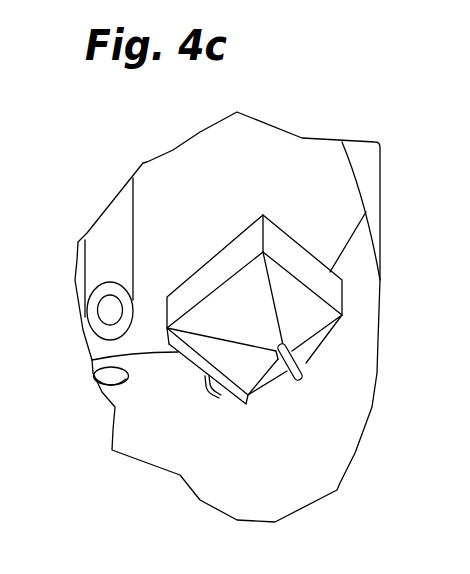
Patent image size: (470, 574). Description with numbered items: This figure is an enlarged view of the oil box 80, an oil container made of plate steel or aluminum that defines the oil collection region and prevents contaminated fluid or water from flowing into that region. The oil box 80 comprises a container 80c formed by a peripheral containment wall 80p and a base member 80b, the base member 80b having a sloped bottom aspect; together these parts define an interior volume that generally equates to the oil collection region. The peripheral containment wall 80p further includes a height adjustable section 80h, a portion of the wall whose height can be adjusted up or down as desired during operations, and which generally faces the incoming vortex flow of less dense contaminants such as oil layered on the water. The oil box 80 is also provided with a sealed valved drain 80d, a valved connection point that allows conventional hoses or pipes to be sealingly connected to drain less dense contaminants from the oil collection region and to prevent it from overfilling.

The oil box 80 is at (178, 265).
The container 80c is at (182, 233).
The peripheral containment wall 80p is at (317, 275).
The base member 80b is at (259, 331).
The valved drain 80d is at (323, 363).
The height adjustable section 80h is at (208, 412).